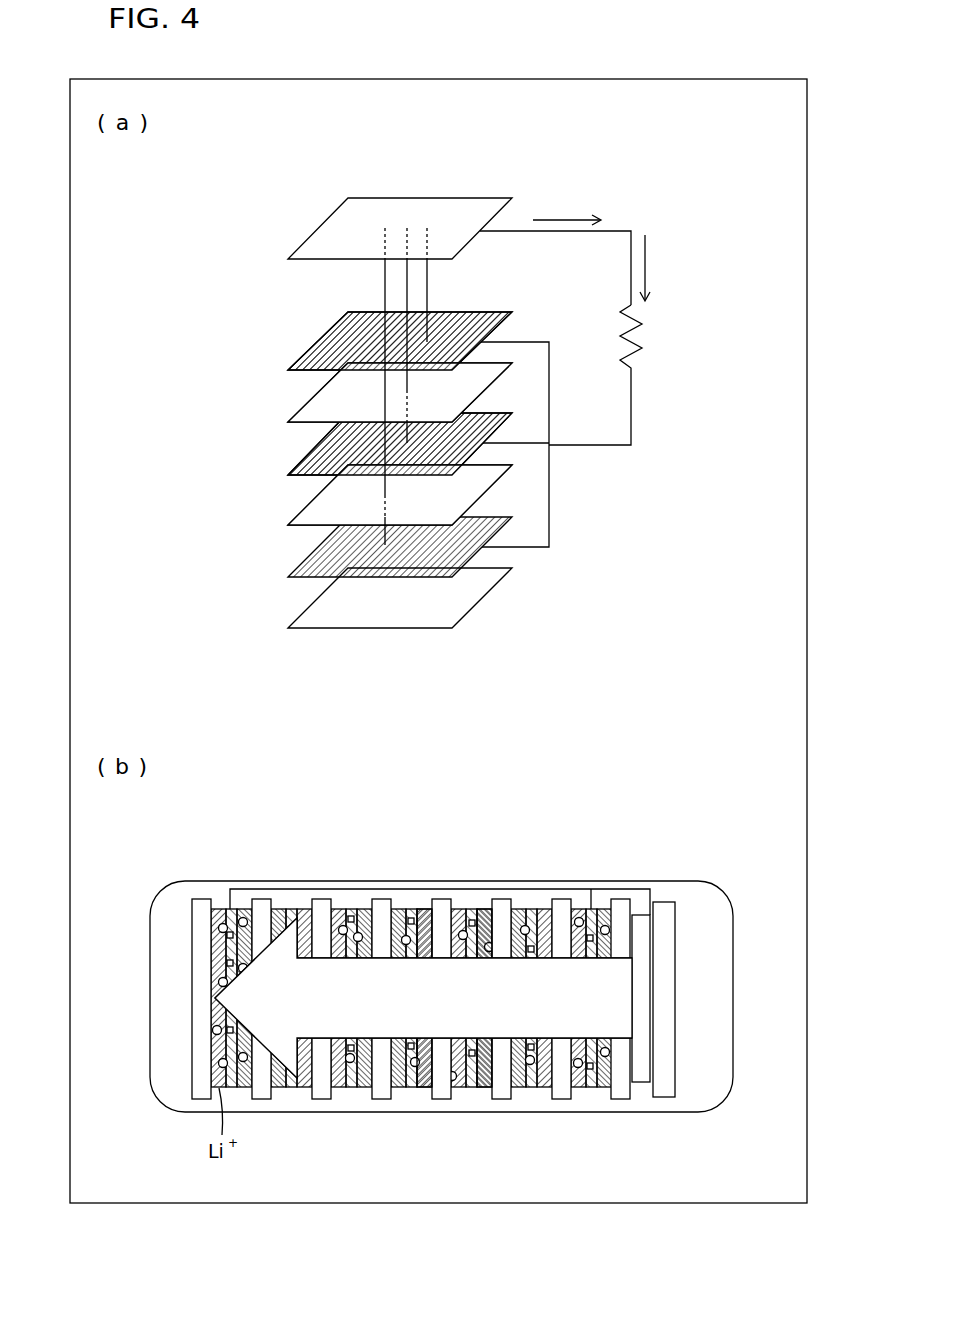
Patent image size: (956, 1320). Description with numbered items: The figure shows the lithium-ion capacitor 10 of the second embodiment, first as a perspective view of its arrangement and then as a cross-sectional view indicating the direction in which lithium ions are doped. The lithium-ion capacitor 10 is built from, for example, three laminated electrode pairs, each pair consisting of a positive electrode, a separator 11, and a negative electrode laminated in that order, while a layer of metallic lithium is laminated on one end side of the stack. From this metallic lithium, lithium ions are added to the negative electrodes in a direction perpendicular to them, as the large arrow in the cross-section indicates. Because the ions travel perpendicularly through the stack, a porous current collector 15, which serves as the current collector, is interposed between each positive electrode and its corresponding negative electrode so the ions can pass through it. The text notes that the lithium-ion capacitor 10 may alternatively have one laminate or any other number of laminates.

The lithium-ion capacitor 10 is at (199, 240).
The separator 11 is at (622, 1091).
The porous current collector 15 is at (410, 912).